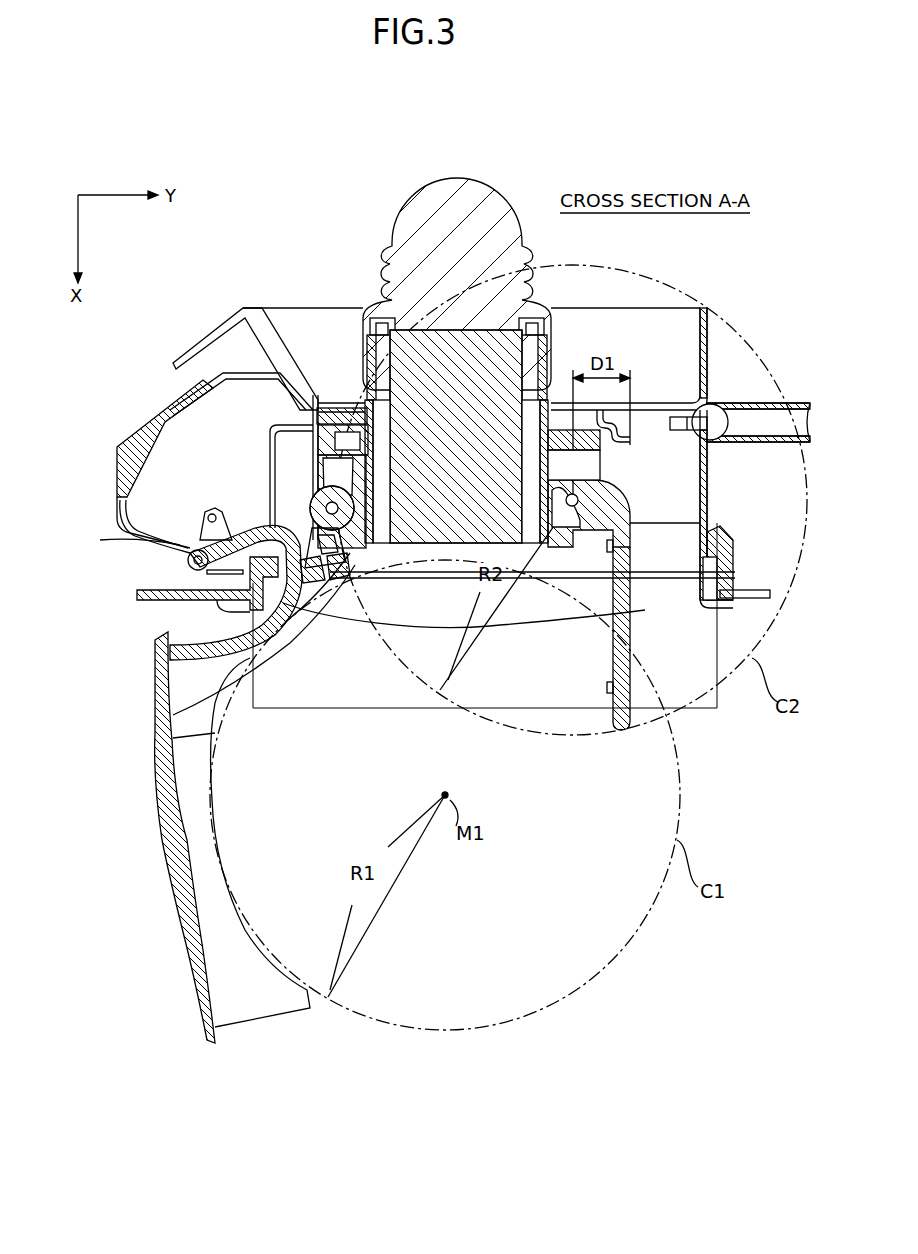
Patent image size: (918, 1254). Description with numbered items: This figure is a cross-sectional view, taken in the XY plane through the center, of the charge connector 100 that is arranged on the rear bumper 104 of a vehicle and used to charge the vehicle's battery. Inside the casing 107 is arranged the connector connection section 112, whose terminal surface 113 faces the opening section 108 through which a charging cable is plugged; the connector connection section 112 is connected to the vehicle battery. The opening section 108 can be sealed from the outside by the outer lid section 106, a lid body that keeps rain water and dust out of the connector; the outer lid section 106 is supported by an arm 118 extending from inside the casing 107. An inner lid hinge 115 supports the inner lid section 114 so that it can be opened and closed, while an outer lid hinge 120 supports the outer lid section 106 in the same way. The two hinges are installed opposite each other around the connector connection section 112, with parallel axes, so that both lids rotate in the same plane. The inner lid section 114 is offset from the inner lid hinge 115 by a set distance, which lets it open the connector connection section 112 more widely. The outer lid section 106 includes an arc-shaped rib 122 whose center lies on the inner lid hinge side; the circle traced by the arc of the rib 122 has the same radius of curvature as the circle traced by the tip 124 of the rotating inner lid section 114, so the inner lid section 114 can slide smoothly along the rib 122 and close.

The charge connector 100 is at (266, 286).
The rear bumper 104 is at (165, 607).
The outer lid section 106 is at (160, 874).
The casing 107 is at (703, 483).
The opening section 108 is at (485, 633).
The connector connection section 112 is at (557, 407).
The terminal surface 113 is at (457, 550).
The inner lid section 114 is at (628, 623).
The inner lid hinge 115 is at (570, 508).
The arm 118 is at (215, 735).
The outer lid hinge 120 is at (188, 550).
The rib 122 is at (247, 1000).
The tip 124 is at (622, 733).